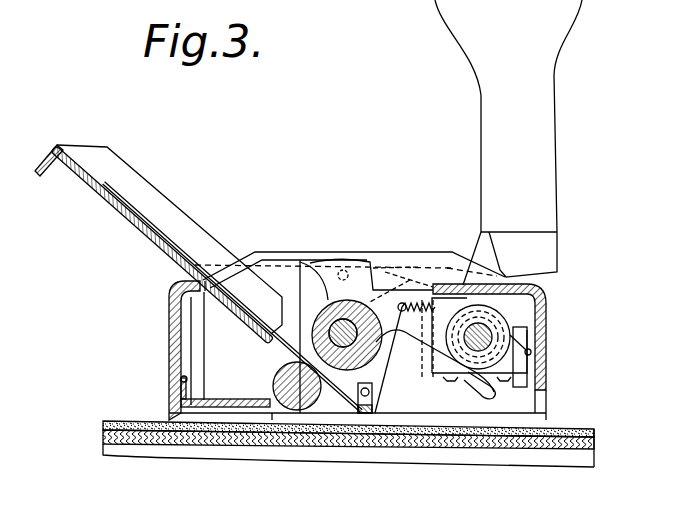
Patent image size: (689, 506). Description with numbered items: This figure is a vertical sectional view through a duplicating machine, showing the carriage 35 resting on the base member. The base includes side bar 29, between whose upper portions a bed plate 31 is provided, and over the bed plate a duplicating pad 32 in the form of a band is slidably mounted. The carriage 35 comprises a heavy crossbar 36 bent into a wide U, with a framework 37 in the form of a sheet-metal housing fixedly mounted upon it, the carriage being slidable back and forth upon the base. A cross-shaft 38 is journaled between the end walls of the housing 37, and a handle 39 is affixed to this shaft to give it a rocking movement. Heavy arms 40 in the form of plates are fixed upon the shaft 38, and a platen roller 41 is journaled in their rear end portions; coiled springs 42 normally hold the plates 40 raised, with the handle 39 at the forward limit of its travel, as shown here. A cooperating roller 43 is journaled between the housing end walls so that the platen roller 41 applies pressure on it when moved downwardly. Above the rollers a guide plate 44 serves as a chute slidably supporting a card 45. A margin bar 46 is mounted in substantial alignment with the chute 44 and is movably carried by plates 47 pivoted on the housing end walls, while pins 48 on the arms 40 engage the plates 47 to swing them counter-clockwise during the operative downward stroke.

The side bar 29 is at (574, 465).
The bed plate 31 is at (596, 447).
The duplicating pad 32 is at (574, 430).
The carriage 35 is at (271, 250).
The crossbar 36 is at (440, 418).
The framework 37 is at (169, 330).
The cross-shaft 38 is at (488, 324).
The handle 39 is at (546, 153).
The arm 40 is at (360, 273).
The platen roller 41 is at (333, 290).
The coiled spring 42 is at (480, 392).
The cooperating roller 43 is at (275, 378).
The guide plate 44 is at (100, 189).
The card 45 is at (182, 242).
The margin bar 46 is at (352, 413).
The plate 47 is at (373, 374).
The pin 48 is at (340, 268).